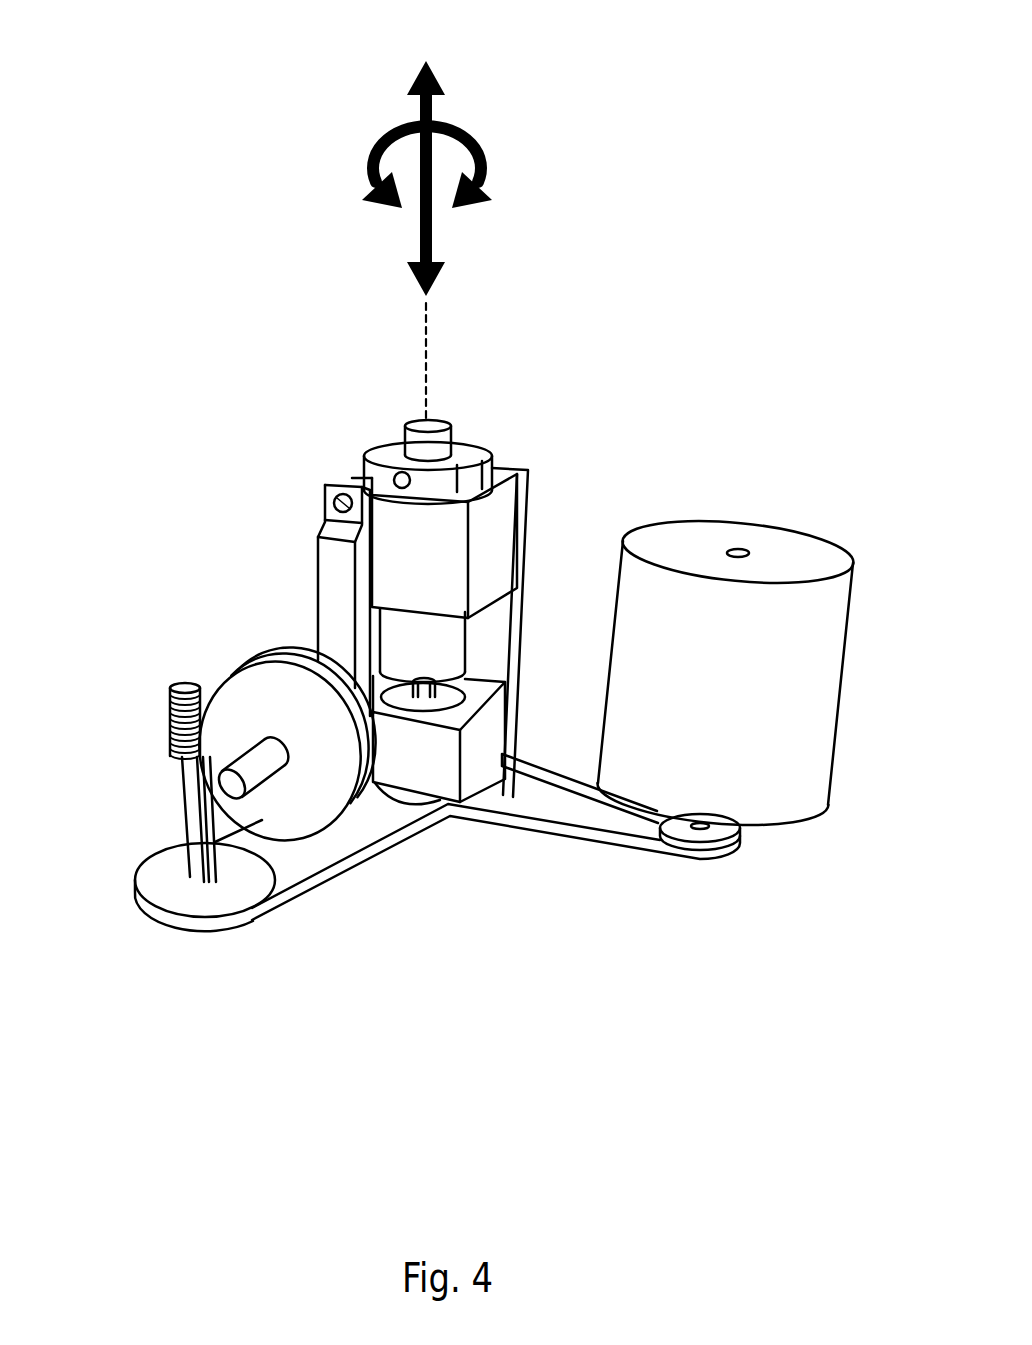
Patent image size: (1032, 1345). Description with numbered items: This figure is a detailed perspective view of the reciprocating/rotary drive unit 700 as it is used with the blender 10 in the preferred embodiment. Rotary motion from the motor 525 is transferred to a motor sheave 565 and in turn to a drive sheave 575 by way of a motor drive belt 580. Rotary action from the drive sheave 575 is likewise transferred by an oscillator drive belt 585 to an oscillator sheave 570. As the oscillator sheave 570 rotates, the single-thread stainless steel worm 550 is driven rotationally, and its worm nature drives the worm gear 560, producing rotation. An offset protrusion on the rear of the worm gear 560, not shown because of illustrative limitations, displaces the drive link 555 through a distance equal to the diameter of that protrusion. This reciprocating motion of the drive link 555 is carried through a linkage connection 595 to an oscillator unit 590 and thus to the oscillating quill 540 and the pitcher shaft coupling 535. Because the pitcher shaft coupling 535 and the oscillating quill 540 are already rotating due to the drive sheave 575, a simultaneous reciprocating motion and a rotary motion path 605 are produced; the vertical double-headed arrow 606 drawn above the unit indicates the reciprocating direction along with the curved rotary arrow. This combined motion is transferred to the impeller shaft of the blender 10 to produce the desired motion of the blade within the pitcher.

The blender 10 is at (152, 189).
The motor 525 is at (792, 553).
The pitcher shaft coupling 535 is at (525, 347).
The oscillating quill 540 is at (478, 466).
The worm, 64p, single thread, s/s 550 is at (178, 757).
The drive link 555 is at (334, 567).
The worm gear, 180t, 64 p 560 is at (250, 695).
The motor sheave 565 is at (718, 832).
The oscillator sheave 570 is at (233, 882).
The drive sheave 575 is at (437, 797).
The motor drive belt 580 is at (550, 820).
The oscillator drive belt 585 is at (365, 847).
The oscillator unit 590 is at (443, 665).
The linkage connection 595 is at (374, 450).
The rotary motion path 605 is at (488, 163).
The vertical motion arrow 606 is at (432, 73).
The reciprocating/rotary drive unit 700 is at (132, 729).